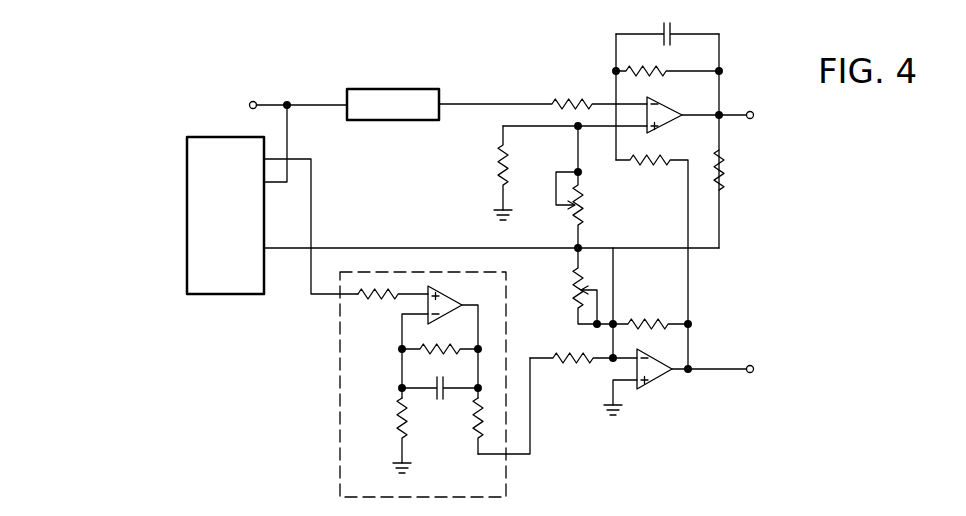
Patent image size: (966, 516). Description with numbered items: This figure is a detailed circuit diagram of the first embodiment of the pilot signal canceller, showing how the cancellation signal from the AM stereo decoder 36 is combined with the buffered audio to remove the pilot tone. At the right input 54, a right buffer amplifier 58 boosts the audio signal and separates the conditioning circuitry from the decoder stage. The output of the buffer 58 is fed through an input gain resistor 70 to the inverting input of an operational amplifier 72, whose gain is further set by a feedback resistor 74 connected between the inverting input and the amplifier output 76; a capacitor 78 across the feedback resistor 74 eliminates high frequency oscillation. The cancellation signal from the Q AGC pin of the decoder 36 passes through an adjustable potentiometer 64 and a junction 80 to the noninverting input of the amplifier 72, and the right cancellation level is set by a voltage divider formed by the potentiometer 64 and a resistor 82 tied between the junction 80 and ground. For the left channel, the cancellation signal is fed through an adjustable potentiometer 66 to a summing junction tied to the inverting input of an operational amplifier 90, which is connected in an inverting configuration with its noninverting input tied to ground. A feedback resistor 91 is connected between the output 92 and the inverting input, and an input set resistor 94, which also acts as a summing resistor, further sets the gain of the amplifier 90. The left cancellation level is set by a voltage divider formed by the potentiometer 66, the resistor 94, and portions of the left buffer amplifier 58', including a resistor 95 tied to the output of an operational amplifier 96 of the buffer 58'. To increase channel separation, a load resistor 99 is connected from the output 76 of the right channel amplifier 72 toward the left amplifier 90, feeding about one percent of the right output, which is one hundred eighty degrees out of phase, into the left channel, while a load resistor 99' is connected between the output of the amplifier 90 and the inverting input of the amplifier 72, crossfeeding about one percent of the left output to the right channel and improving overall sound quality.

The AM stereo decoder 36 is at (187, 197).
The right input 54 is at (338, 104).
The right buffer amplifier 58 is at (411, 89).
The left buffer amplifier 58' is at (385, 328).
The input gain resistor 70 is at (566, 100).
The operational amplifier 72 is at (664, 100).
The feedback resistor 74 is at (668, 70).
The amplifier output 76 is at (702, 116).
The capacitor 78 is at (674, 25).
The junction 80 is at (576, 128).
The resistor 82 is at (497, 152).
The adjustable potentiometer 64 is at (584, 205).
The adjustable potentiometer 66 is at (572, 290).
The load resistor 99 is at (749, 161).
The load resistor 99' is at (652, 262).
The feedback resistor 91 is at (640, 322).
The input set resistor 94 is at (570, 355).
The operational amplifier 96 is at (447, 295).
The resistor 95 is at (475, 430).
The operational amplifier 90 is at (657, 386).
The output 92 is at (680, 370).